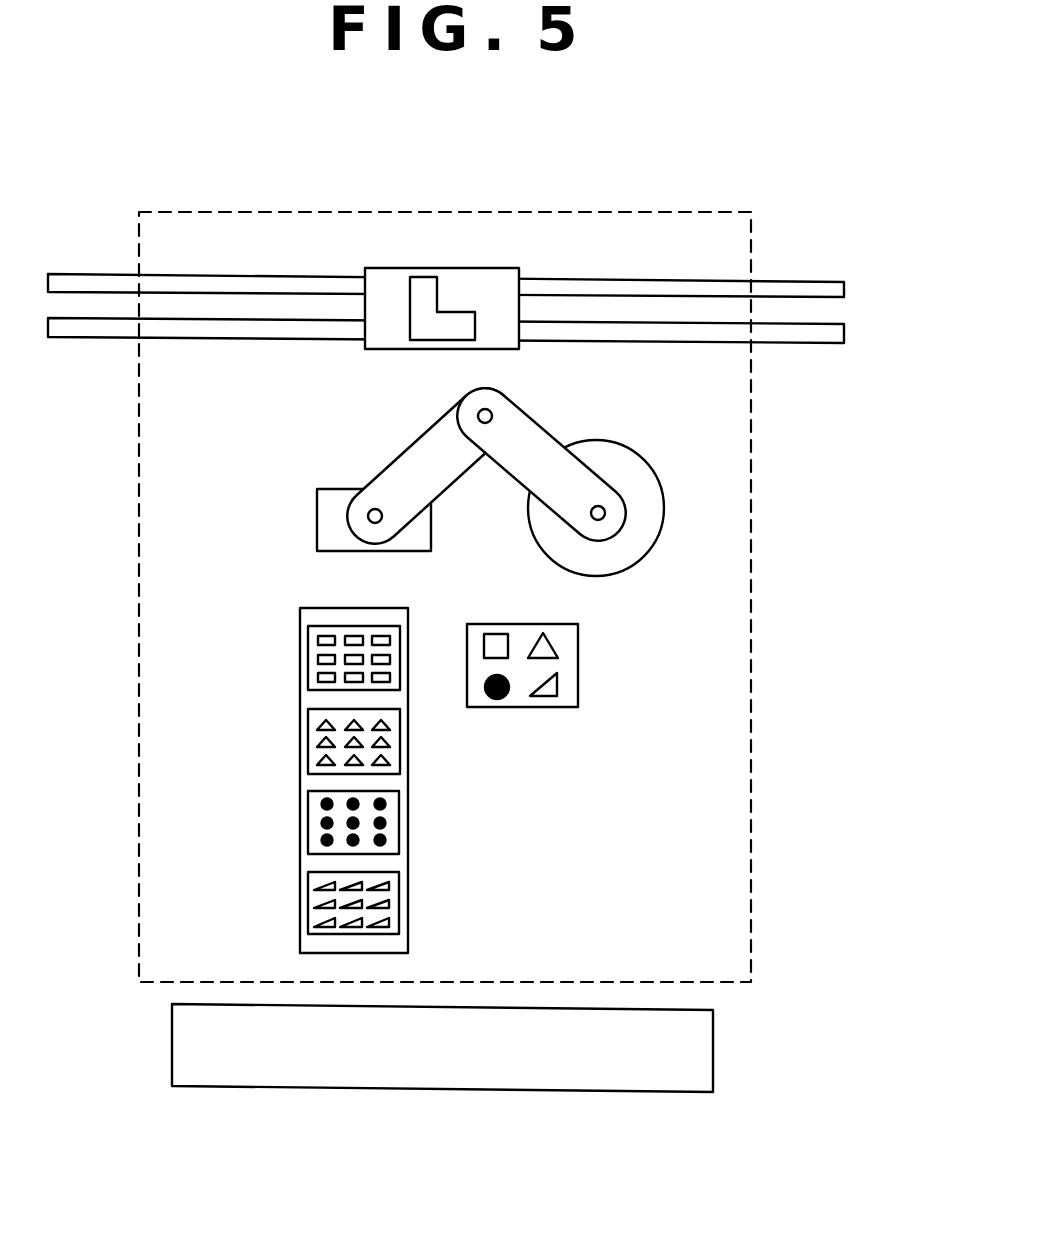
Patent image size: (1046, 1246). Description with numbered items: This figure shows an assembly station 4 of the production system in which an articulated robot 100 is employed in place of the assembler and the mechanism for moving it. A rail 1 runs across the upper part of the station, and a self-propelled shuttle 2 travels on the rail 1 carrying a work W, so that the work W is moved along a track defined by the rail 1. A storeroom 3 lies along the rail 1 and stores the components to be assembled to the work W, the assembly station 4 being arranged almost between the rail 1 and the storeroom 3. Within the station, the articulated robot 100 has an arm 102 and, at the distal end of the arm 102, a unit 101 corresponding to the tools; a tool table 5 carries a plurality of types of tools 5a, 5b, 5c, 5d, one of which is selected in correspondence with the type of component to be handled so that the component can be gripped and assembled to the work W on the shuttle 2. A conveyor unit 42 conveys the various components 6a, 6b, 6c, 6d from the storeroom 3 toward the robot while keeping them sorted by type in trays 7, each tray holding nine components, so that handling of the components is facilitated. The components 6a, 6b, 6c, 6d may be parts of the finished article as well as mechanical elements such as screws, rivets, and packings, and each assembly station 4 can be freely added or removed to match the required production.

The rail 1 is at (828, 338).
The shuttle 2 is at (481, 268).
The work W is at (421, 290).
The storeroom 3 is at (714, 1050).
The assembly station 4 is at (681, 211).
The tool table 5 is at (550, 670).
The tool 5a is at (497, 638).
The tool 5b is at (543, 636).
The tool 5c is at (497, 698).
The tool 5d is at (550, 698).
The component 6a is at (323, 640).
The component 6b is at (322, 760).
The component 6c is at (323, 806).
The component 6d is at (285, 944).
The tray 7 is at (294, 776).
The conveyor unit 42 is at (288, 792).
The articulated robot 100 is at (615, 420).
The unit 101 is at (317, 514).
The arm 102 is at (542, 480).